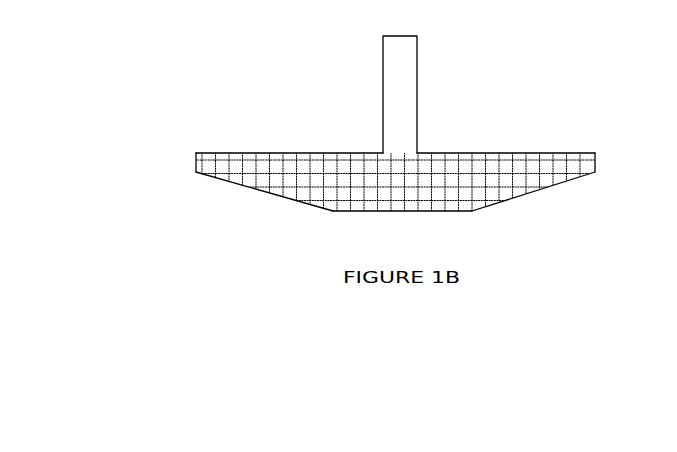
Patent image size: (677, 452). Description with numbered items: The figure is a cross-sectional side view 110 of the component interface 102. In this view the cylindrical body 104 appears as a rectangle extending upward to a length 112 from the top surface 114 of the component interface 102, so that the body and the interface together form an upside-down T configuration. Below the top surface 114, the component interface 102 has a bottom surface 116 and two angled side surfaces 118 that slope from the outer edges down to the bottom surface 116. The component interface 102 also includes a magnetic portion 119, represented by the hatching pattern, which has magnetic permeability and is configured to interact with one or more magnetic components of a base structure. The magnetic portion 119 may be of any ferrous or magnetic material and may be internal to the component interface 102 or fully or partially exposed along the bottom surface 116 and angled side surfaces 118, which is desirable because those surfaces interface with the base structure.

The component interface 102 is at (544, 45).
The cylindrical body 104 is at (420, 63).
The cross-sectional side view 110 is at (590, 128).
The length 112 is at (362, 44).
The top surface 114 is at (395, 143).
The bottom surface 116 is at (402, 222).
The angled side surfaces 118 is at (282, 195).
The magnetic portion 119 is at (595, 160).